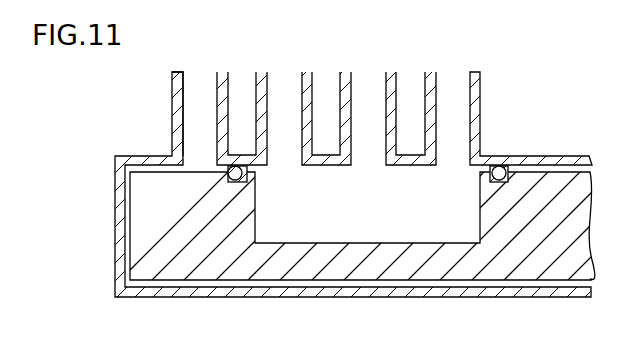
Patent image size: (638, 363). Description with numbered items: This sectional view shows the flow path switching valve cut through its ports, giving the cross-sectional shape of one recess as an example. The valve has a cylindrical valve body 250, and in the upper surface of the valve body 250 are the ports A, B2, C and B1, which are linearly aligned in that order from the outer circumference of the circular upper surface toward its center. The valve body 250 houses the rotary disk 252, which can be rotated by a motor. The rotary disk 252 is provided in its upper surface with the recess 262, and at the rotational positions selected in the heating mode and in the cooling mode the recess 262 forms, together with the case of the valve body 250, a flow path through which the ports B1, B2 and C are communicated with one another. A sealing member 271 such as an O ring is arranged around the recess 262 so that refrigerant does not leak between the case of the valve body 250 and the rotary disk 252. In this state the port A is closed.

The valve body 250 is at (118, 194).
The rotary disk 252 is at (133, 244).
The recess 262 is at (480, 208).
The sealing member 271 is at (247, 168).
The port A is at (189, 99).
The port B1 is at (426, 103).
The port B2 is at (256, 103).
The port C is at (338, 103).